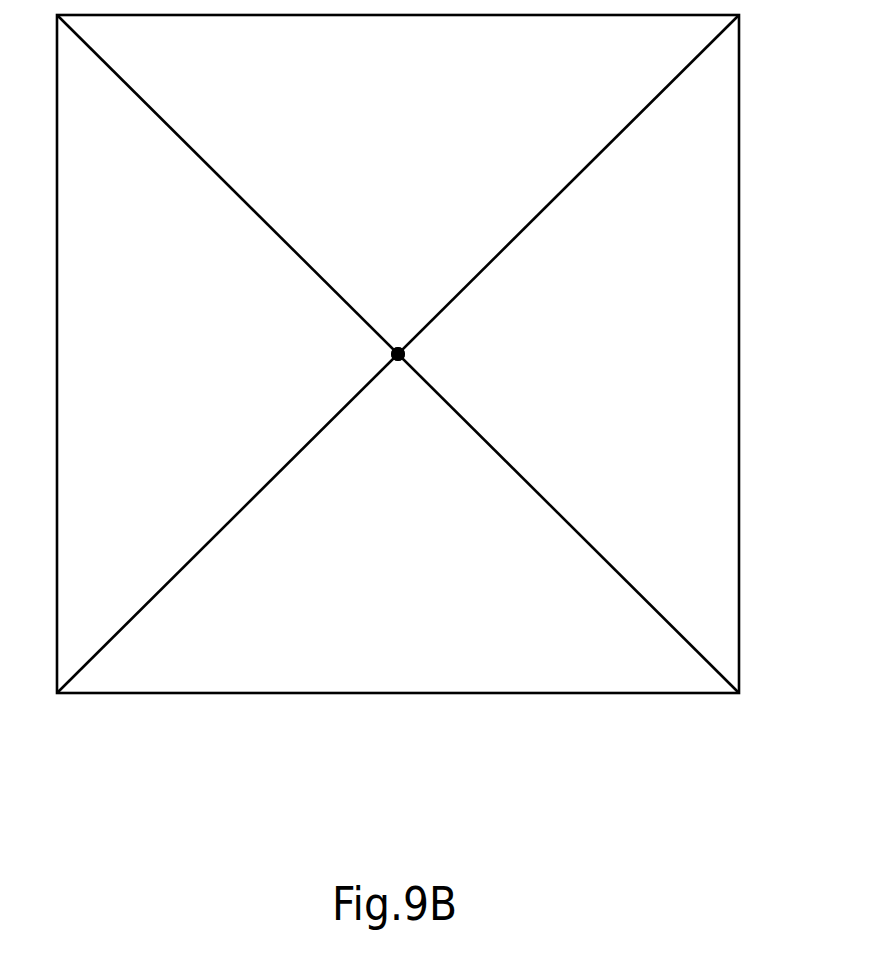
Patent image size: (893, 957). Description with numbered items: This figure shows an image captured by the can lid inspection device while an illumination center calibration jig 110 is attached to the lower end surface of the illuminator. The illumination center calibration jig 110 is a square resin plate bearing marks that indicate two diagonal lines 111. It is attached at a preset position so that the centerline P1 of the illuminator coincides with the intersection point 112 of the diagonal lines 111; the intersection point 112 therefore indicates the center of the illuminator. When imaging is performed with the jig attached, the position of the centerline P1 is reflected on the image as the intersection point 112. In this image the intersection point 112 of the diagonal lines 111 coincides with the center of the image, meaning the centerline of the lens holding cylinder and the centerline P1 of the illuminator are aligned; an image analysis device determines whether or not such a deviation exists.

The illumination center calibration jig 110 is at (492, 693).
The diagonal lines 111 is at (205, 162).
The intersection point 112 is at (396, 361).
The centerline of the illuminator P1 is at (400, 348).